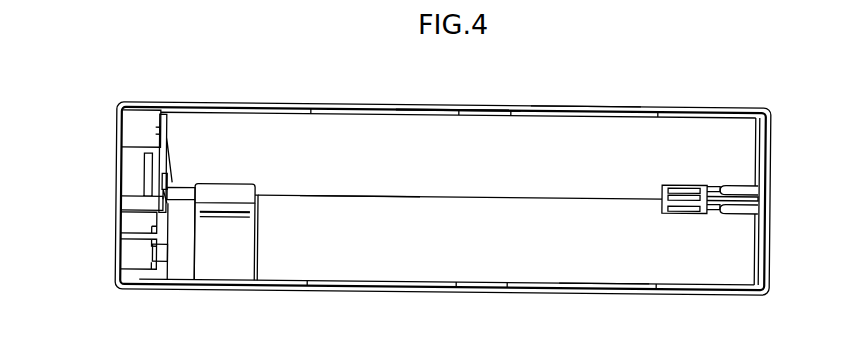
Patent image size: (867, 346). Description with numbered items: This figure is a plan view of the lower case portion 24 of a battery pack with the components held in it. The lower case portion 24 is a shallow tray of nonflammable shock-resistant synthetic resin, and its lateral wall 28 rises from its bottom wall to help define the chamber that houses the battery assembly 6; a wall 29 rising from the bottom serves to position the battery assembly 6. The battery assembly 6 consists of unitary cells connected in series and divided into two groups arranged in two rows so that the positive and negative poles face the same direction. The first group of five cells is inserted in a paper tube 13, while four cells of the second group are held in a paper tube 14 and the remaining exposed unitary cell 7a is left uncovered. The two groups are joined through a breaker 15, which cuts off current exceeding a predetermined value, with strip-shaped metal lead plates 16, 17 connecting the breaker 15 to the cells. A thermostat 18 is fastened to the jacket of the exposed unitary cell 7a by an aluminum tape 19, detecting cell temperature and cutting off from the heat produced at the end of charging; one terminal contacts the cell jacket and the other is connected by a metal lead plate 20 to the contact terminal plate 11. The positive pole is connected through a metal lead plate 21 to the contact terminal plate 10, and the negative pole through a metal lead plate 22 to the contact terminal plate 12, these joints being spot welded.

The battery assembly 6 is at (427, 168).
The exposed unitary cell 7a is at (180, 270).
The contact terminal plate 10 is at (125, 133).
The contact terminal plate 11 is at (124, 226).
The contact terminal plate 12 is at (122, 259).
The paper tube 13 is at (355, 124).
The paper tube 14 is at (600, 272).
The breaker 15 is at (687, 186).
The metal lead plate 16 is at (736, 190).
The metal lead plate 17 is at (733, 212).
The thermostat 18 is at (223, 190).
The aluminum tape 19 is at (245, 263).
The metal lead plate 20 is at (122, 203).
The metal lead plate 21 is at (174, 133).
The metal lead plate 22 is at (172, 257).
The lower case portion 24 is at (524, 101).
The lateral wall 28 is at (428, 104).
The wall 29 is at (168, 233).